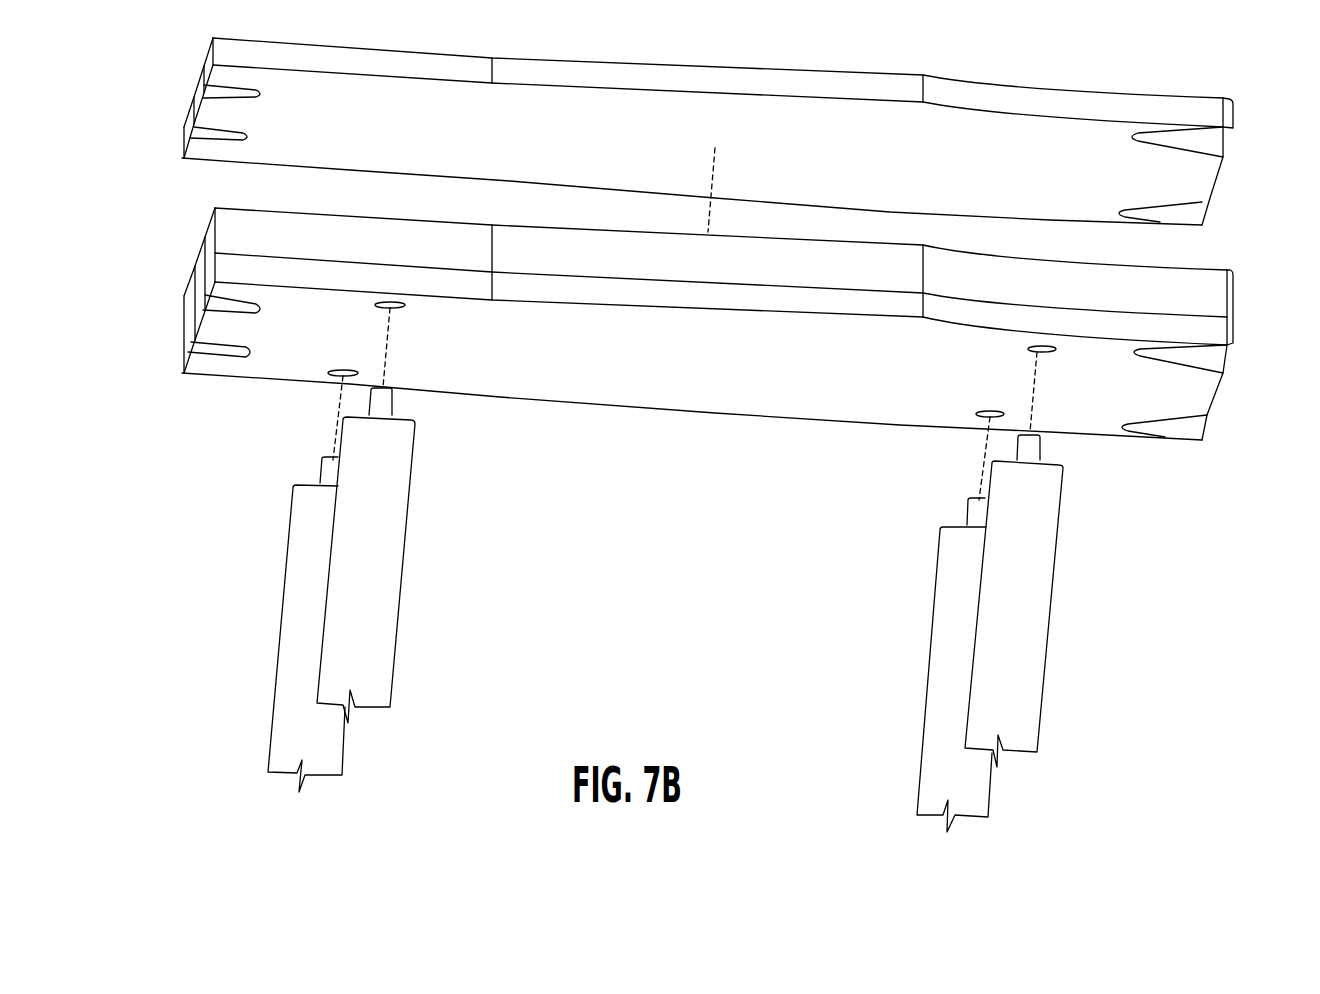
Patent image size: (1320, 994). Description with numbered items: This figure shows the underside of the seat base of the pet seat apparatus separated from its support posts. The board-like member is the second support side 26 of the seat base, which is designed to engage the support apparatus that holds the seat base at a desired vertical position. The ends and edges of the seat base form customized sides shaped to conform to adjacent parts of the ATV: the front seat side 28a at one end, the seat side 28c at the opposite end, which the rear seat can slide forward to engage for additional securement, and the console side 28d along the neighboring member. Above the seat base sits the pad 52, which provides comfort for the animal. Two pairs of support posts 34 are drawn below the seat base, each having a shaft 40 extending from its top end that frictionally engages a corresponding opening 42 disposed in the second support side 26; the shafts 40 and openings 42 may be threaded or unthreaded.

The second support side 26 is at (788, 383).
The front seat side 28a is at (198, 276).
The seat side 28c is at (1244, 327).
The console side 28d is at (707, 135).
The support post 34 is at (397, 532).
The shaft 40 is at (385, 398).
The opening 42 is at (344, 370).
The pad 52 is at (193, 94).